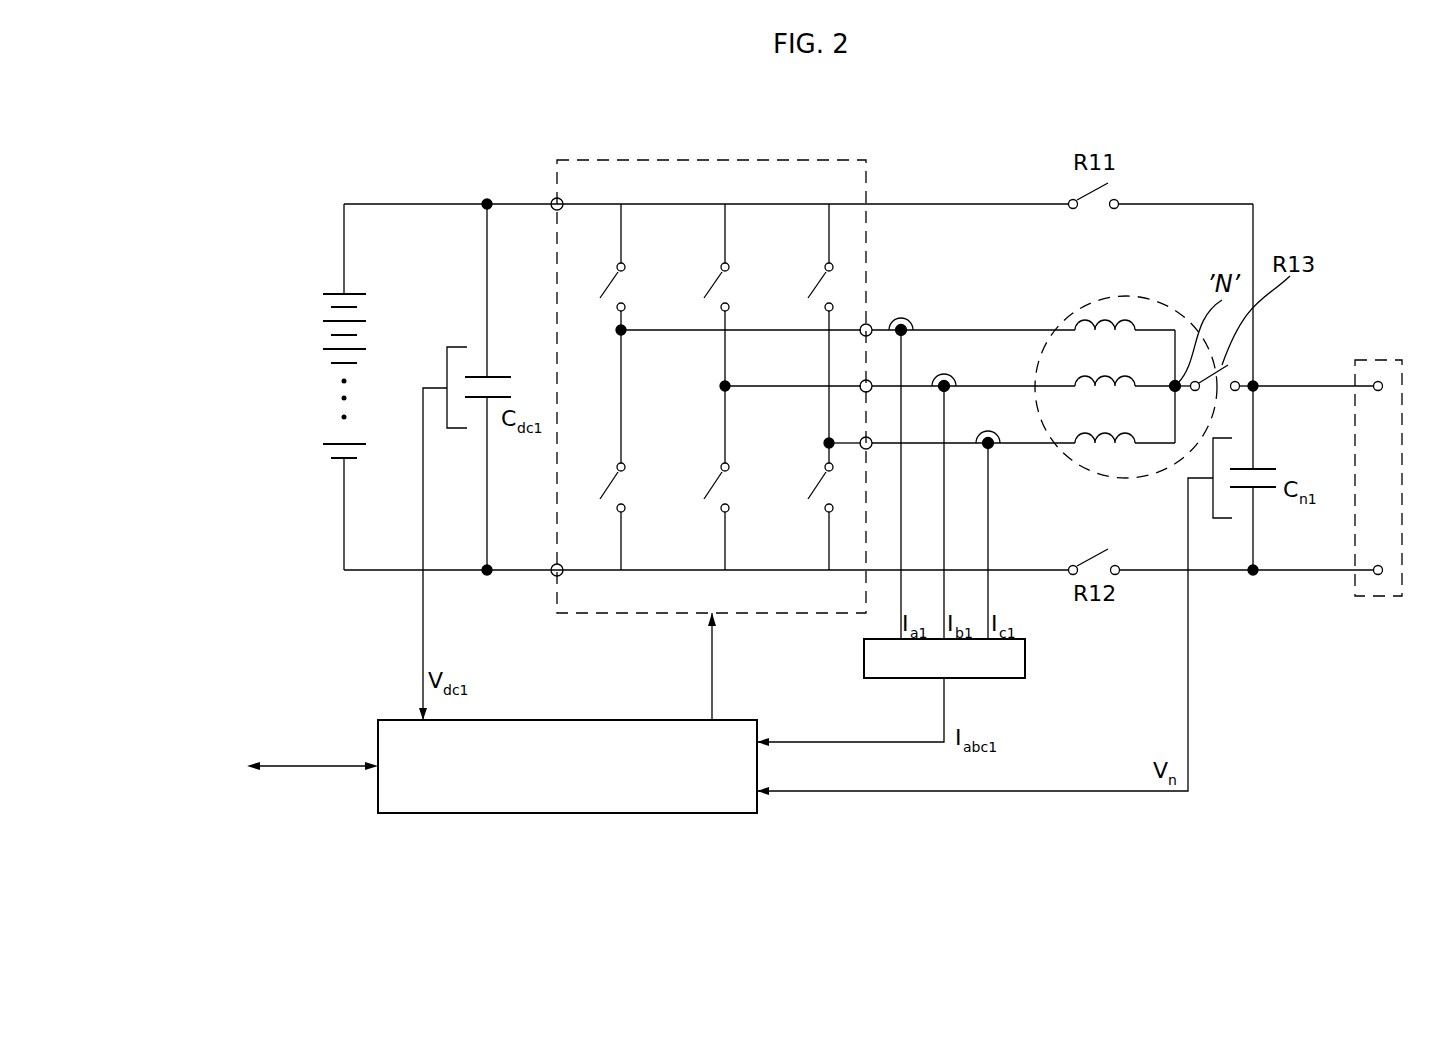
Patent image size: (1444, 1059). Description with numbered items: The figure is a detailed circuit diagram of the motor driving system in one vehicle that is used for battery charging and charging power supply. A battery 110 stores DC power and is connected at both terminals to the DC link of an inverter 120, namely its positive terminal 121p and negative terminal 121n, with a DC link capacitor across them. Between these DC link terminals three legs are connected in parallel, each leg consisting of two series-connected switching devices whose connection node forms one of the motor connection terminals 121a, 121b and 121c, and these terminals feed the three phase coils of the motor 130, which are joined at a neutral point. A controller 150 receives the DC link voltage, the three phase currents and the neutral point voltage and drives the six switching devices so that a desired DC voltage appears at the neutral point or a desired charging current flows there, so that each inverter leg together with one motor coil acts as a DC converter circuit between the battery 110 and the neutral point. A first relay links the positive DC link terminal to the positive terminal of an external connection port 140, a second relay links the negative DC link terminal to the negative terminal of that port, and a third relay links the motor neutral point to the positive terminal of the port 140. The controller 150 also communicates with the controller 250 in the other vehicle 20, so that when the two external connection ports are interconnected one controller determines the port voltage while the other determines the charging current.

The battery 110 is at (327, 393).
The inverter 120 is at (866, 248).
The positive terminal of the DC link 121p is at (555, 198).
The negative terminal of the DC link 121n is at (556, 576).
The motor connection terminal 121a is at (870, 325).
The motor connection terminal 121b is at (872, 382).
The motor connection terminal 121c is at (866, 449).
The motor 130 is at (1128, 295).
The external connection port 140 is at (1378, 360).
The controller 150 is at (590, 814).
The controller 250 is at (244, 788).
The vehicle 20 is at (221, 832).